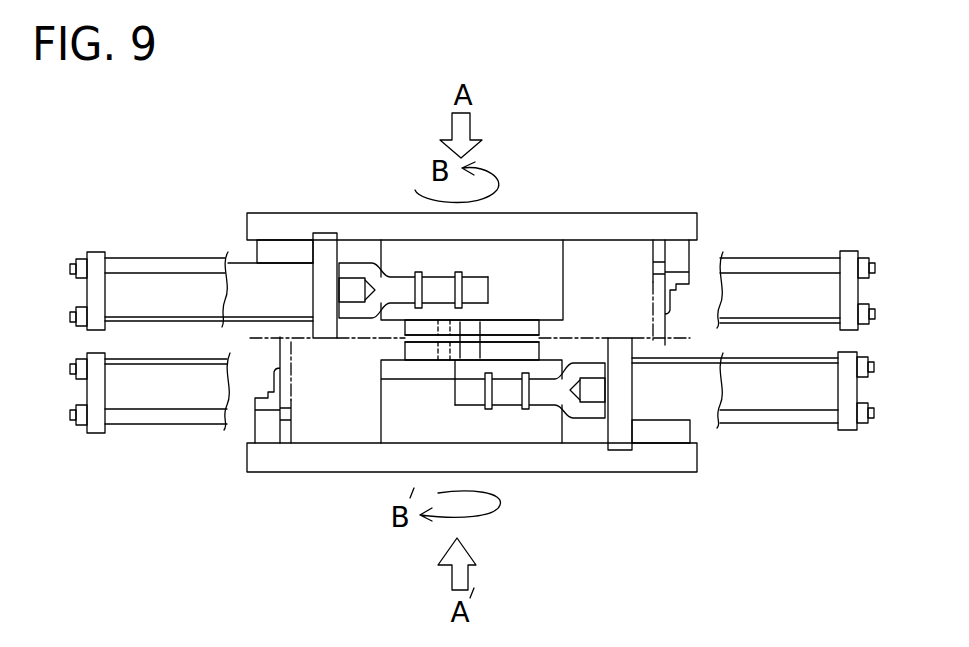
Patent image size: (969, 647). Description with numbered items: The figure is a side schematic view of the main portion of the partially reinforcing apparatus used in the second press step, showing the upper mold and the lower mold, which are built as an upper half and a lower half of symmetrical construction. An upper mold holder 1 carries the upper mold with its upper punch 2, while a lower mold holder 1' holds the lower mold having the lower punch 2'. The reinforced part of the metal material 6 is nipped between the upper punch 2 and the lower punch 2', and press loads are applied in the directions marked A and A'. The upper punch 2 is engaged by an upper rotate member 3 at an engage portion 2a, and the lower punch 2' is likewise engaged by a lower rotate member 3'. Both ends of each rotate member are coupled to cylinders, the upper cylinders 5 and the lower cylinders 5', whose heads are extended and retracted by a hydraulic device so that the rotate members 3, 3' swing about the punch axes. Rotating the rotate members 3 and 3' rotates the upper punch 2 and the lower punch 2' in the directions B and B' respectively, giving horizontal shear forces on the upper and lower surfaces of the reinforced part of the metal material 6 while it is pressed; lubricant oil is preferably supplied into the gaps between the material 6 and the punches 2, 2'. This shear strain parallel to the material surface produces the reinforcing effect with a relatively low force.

The upper mold holder 1 is at (470, 201).
The lower mold holder 1' is at (472, 492).
The upper punch 2 is at (481, 242).
The lower punch 2' is at (483, 435).
The engage portion 2a is at (500, 315).
The upper rotate member 3 is at (412, 240).
The lower rotate member 3' is at (471, 468).
The upper cylinders 5 is at (472, 264).
The lower cylinders 5' is at (472, 423).
The metal material 6 is at (468, 348).